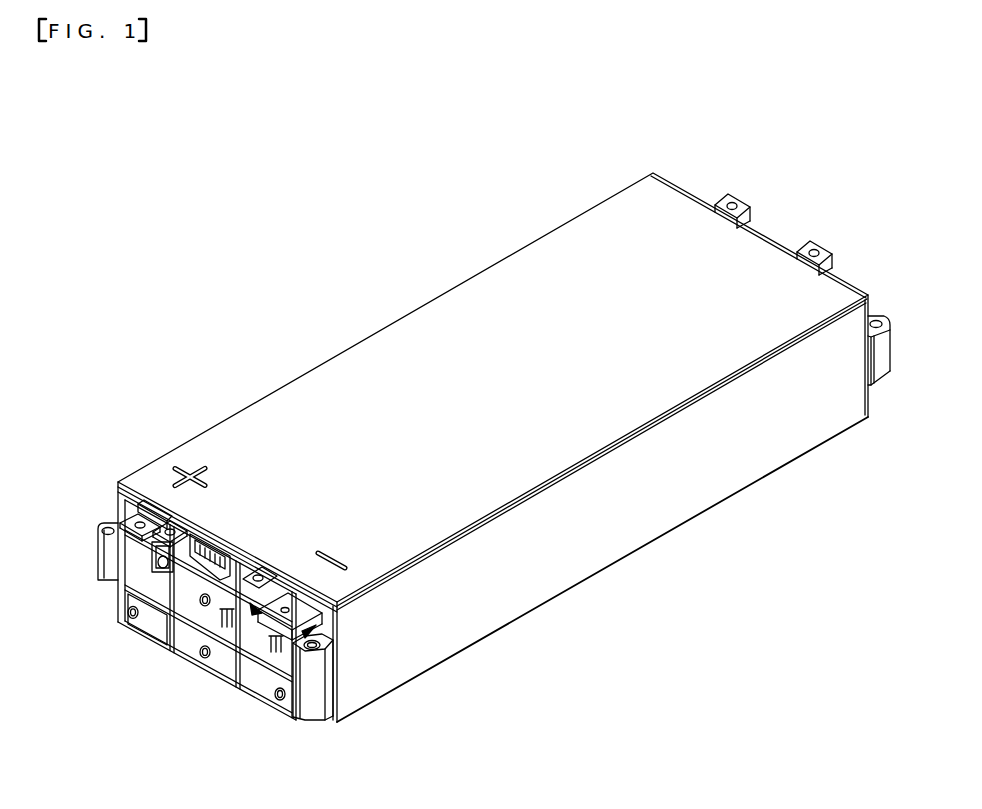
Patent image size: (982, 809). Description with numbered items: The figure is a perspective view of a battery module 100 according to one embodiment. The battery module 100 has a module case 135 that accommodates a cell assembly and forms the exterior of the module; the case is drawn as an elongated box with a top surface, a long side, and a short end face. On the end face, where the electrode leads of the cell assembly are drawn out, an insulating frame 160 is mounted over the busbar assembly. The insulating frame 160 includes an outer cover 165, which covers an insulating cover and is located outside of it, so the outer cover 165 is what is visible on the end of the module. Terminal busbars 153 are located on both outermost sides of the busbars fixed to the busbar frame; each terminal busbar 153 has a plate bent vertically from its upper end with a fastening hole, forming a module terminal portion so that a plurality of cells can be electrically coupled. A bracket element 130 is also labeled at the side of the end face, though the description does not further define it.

The battery module 100 is at (355, 294).
The mounting bracket 130 is at (115, 585).
The module case 135 is at (618, 532).
The terminal busbar 153 is at (123, 525).
The insulating frame 160 is at (246, 704).
The outer cover 165 is at (160, 625).